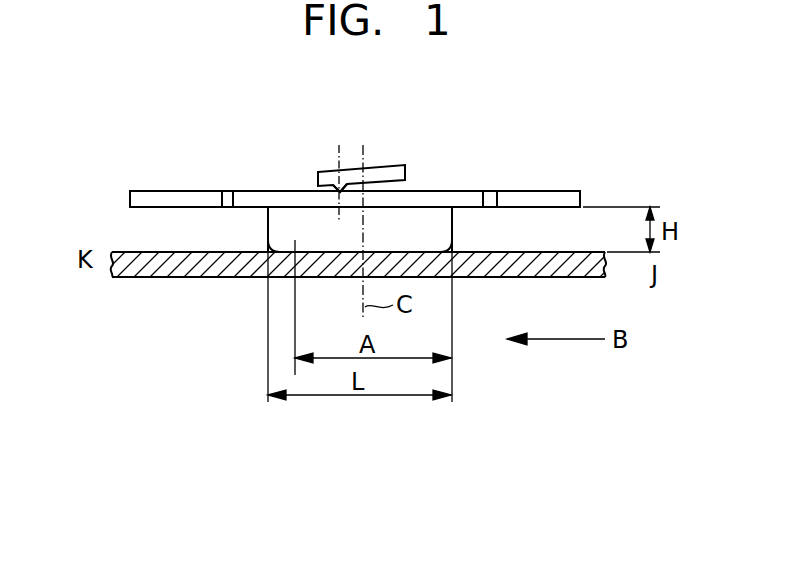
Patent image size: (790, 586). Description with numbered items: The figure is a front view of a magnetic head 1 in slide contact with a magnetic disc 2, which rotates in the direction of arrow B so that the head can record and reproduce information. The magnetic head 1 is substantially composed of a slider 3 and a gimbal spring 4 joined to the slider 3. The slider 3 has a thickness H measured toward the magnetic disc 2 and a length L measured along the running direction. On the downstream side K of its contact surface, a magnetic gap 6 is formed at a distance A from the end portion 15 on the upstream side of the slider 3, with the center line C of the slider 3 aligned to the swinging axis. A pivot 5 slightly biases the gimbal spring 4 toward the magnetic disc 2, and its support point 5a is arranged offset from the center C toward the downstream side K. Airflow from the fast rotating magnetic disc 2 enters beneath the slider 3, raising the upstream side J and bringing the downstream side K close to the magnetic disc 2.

The magnetic head 1 is at (280, 174).
The magnetic disc 2 is at (182, 278).
The slider 3 is at (268, 221).
The gimbal spring 4 is at (555, 200).
The pivot 5 is at (400, 162).
The support point 5a is at (345, 194).
The magnetic gap 6 is at (297, 243).
The end portion 15 is at (462, 224).